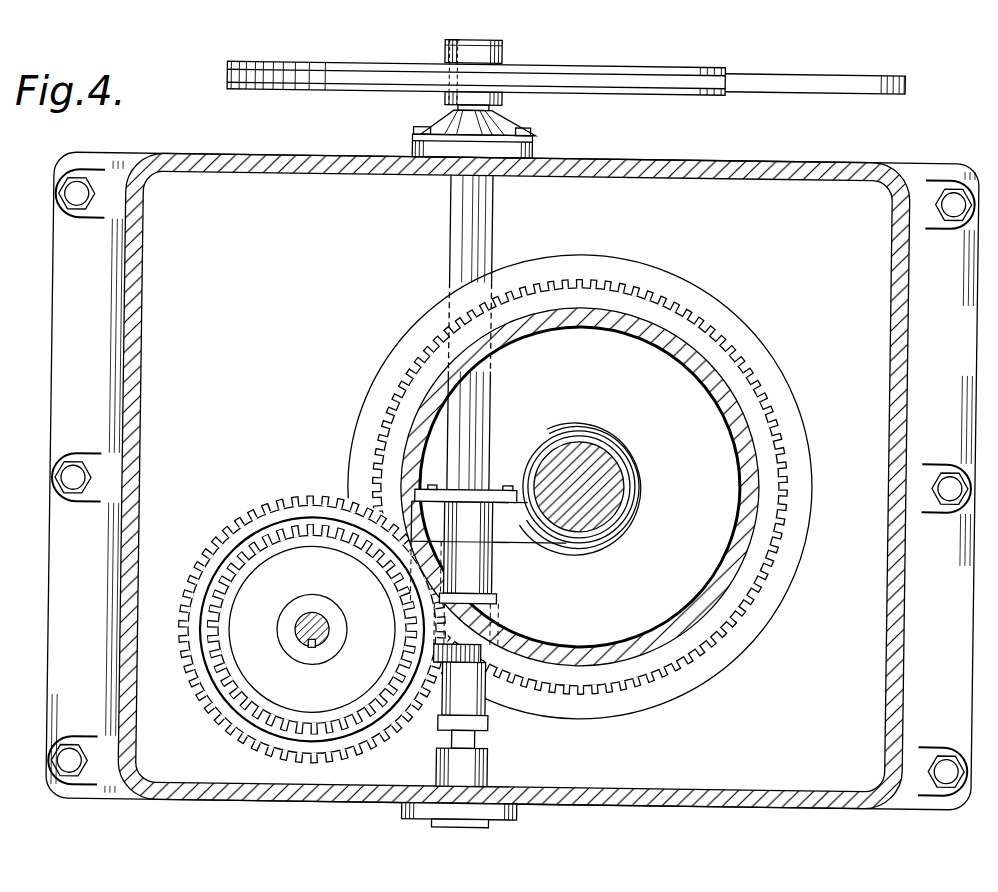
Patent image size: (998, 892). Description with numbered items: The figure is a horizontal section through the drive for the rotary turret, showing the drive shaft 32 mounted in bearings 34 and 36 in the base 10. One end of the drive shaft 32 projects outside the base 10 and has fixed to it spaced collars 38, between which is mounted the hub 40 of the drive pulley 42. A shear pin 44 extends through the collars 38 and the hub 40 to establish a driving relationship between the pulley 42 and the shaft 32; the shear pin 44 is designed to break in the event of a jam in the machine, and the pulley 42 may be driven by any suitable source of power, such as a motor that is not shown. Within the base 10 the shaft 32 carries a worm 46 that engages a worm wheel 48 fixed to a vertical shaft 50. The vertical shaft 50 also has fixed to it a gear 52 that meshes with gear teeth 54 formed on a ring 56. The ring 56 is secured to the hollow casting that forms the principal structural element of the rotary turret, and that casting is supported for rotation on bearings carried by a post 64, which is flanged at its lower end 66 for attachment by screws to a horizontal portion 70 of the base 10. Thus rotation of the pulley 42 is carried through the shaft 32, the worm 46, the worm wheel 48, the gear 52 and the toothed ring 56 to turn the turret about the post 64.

The base 10 is at (783, 797).
The horizontal portion of the base 70 is at (762, 235).
The drive pulley 42 is at (618, 90).
The spaced collars 38 is at (496, 48).
The hub 40 is at (442, 58).
The shear pin 44 is at (434, 36).
The bearing 34 is at (536, 147).
The drive shaft 32 is at (474, 226).
The gear teeth 54 is at (735, 600).
The ring 56 is at (748, 440).
The worm wheel 48 is at (234, 541).
The gear 52 is at (361, 714).
The vertical shaft 50 is at (324, 630).
The post 64 is at (582, 459).
The flanged lower end 66 is at (660, 510).
The worm 46 is at (462, 663).
The bearing 36 is at (481, 770).